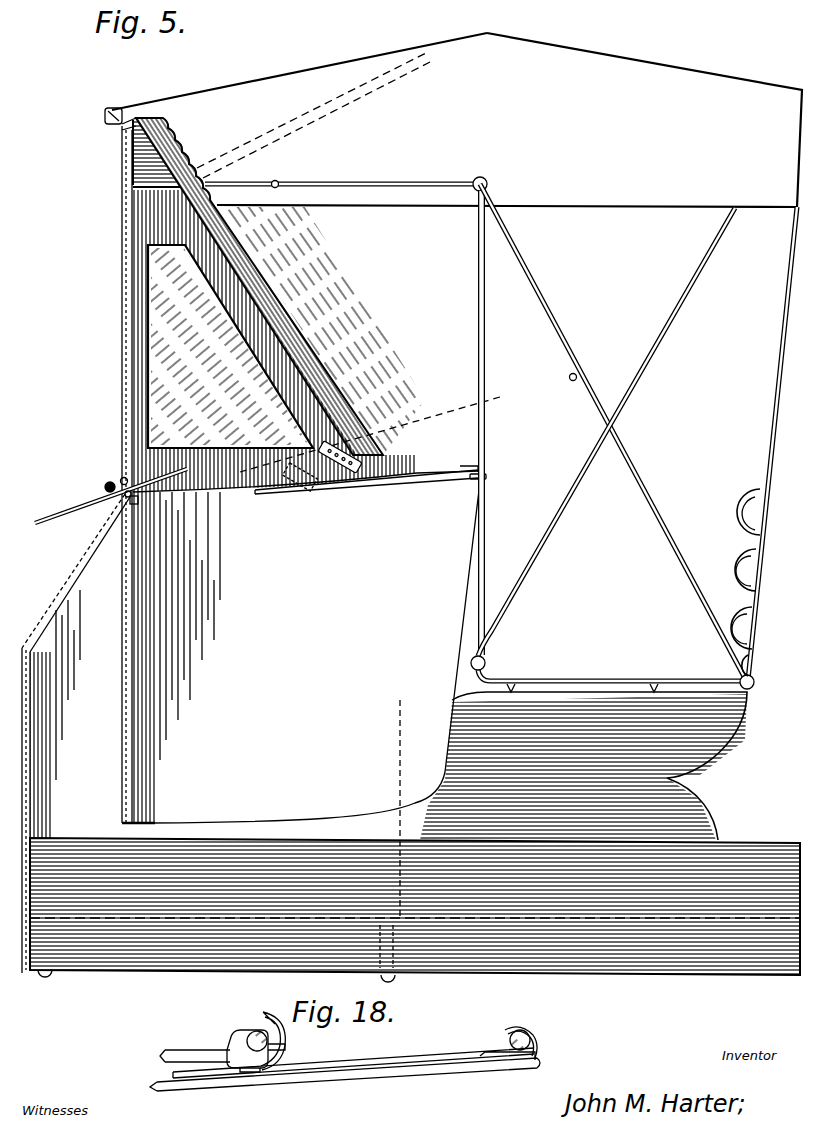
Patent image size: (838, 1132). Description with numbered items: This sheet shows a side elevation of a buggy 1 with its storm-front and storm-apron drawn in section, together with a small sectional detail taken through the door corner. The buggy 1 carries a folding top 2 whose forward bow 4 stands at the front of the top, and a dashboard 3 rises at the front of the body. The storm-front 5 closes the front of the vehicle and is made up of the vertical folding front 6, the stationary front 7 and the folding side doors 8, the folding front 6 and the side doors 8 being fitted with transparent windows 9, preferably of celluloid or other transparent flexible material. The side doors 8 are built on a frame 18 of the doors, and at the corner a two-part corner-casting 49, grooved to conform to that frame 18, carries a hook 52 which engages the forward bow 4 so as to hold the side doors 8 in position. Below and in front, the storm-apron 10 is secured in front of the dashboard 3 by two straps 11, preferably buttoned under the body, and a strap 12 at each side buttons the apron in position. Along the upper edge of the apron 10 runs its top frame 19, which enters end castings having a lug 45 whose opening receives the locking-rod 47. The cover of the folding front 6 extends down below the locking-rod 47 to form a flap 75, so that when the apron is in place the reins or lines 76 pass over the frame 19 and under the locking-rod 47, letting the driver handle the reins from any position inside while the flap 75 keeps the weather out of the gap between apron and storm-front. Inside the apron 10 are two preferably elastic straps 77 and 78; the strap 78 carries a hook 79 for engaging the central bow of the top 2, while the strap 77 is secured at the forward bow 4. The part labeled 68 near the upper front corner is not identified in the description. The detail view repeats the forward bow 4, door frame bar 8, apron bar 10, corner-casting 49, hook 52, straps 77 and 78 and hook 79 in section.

In FIG. 5, the buggy 1 is at (454, 113).
In FIG. 5, the folding top 2 is at (632, 74).
In FIG. 5, the dashboard 3 is at (33, 815).
In FIG. 5, the forward bow 4 is at (483, 364).
In FIG. 18, the forward bow 4 is at (250, 1034).
In FIG. 5, the storm-front 5 is at (122, 318).
In FIG. 5, the vertical folding front 6 is at (122, 292).
In FIG. 5, the stationary front 7 is at (120, 152).
In FIG. 5, the folding side doors 8 is at (135, 342).
In FIG. 18, the folding side doors 8 is at (172, 1055).
In FIG. 5, the transparent windows 9 is at (170, 368).
In FIG. 5, the storm-apron 10 is at (73, 573).
In FIG. 18, the storm-apron 10 is at (462, 1077).
In FIG. 5, the straps 11 is at (30, 977).
In FIG. 5, the strap 12 is at (398, 980).
In FIG. 5, the frame of the doors 18 is at (370, 434).
In FIG. 5, the top frame of the storm-apron 19 is at (138, 500).
In FIG. 5, the lug 45 is at (125, 496).
In FIG. 5, the locking-rod 47 is at (105, 485).
In FIG. 18, the corner-casting 49 is at (238, 1045).
In FIG. 5, the hook 52 is at (360, 456).
In FIG. 18, the hook 52 is at (277, 1024).
In FIG. 5, the corner bracket 68 is at (110, 108).
In FIG. 5, the flap 75 is at (122, 480).
In FIG. 5, the reins or lines 76 is at (44, 516).
In FIG. 5, the strap 77 is at (323, 470).
In FIG. 18, the strap 77 is at (286, 1048).
In FIG. 5, the strap 78 is at (381, 480).
In FIG. 18, the strap 78 is at (432, 1066).
In FIG. 5, the hook 79 is at (487, 476).
In FIG. 18, the hook 79 is at (538, 1036).